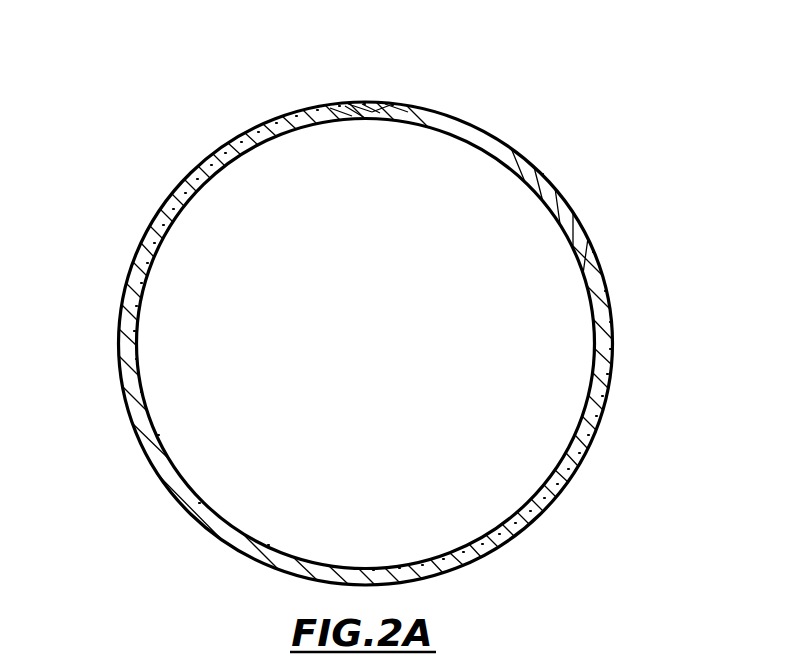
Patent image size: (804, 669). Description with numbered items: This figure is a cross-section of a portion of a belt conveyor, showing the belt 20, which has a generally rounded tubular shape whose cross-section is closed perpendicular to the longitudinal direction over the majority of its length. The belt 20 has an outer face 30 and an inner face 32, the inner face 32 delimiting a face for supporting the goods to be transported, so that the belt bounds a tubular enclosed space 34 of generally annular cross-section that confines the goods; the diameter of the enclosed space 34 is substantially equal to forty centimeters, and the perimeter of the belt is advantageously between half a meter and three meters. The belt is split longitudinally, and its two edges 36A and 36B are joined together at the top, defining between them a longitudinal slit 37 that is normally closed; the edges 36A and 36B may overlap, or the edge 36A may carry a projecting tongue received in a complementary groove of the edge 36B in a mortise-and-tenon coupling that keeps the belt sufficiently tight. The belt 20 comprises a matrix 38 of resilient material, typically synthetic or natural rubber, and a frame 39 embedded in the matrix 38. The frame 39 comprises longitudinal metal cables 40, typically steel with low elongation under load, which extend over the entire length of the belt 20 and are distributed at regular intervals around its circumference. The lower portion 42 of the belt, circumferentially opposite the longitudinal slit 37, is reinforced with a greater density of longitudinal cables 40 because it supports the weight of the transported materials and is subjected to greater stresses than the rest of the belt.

The belt 20 is at (623, 334).
The outer face 30 is at (590, 247).
The inner face 32 is at (584, 272).
The enclosed space 34 is at (192, 349).
The edge 36A is at (346, 103).
The edge 36B is at (392, 103).
The longitudinal slit 37 is at (370, 100).
The matrix 38 is at (600, 484).
The frame 39 is at (627, 291).
The longitudinal metal cables 40 is at (604, 430).
The lower portion 42 is at (447, 574).